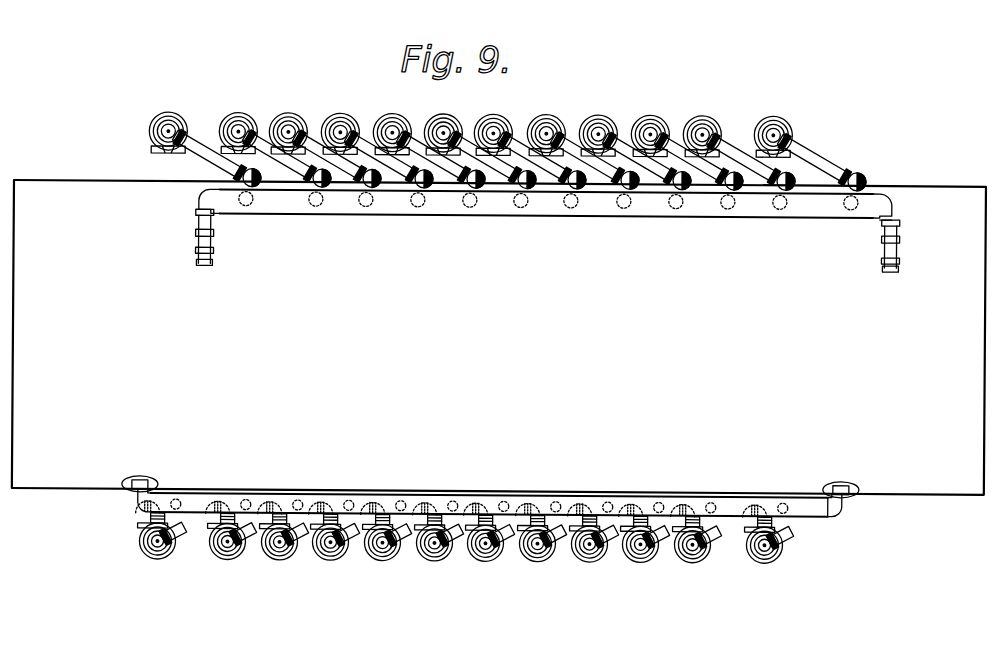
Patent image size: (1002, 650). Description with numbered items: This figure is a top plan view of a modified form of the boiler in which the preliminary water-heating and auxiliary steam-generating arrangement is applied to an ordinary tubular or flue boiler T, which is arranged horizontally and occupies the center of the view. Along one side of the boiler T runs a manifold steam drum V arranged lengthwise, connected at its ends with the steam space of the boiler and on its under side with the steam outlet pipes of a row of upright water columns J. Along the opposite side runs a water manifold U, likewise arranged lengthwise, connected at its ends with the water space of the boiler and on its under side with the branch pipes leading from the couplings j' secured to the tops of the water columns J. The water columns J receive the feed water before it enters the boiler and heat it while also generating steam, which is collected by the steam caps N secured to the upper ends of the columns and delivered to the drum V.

The tubular or flue boiler T is at (499, 337).
The manifold steam drum V is at (442, 200).
The water manifold U is at (822, 506).
The water column J is at (568, 337).
The steam cap N is at (242, 119).
The coupling j' is at (491, 346).